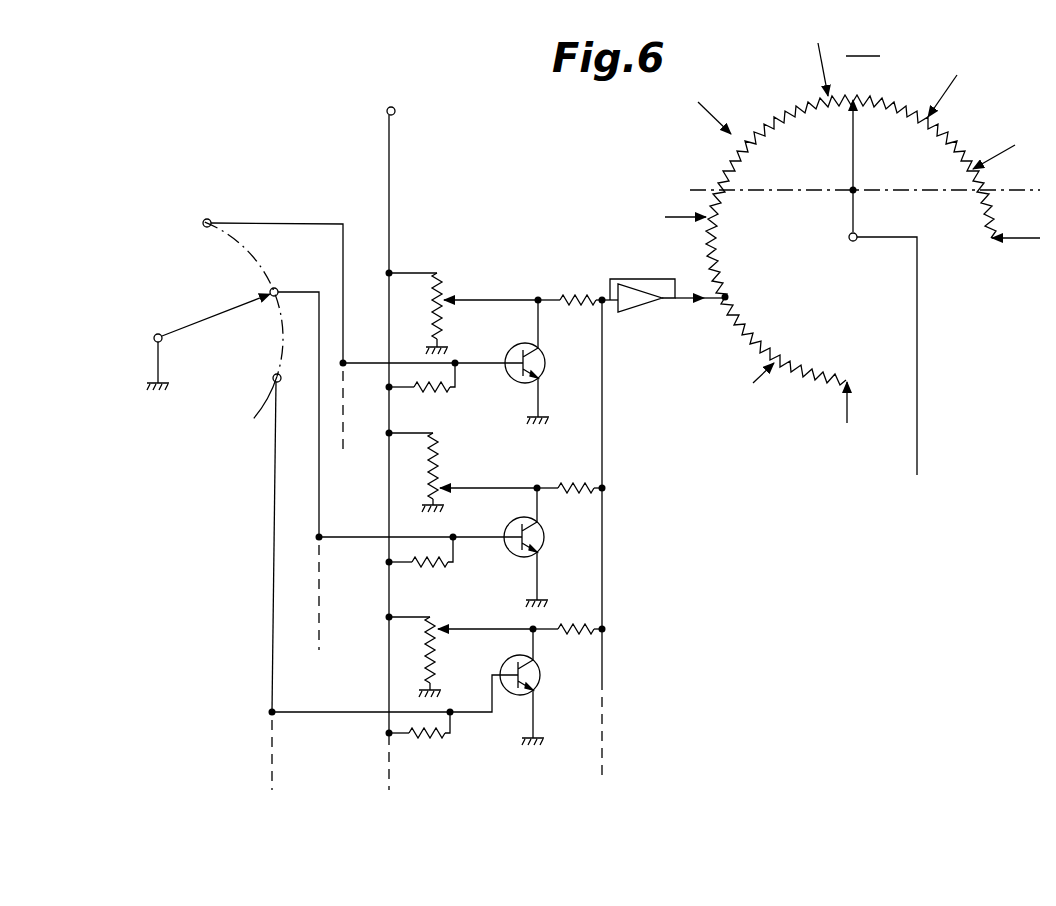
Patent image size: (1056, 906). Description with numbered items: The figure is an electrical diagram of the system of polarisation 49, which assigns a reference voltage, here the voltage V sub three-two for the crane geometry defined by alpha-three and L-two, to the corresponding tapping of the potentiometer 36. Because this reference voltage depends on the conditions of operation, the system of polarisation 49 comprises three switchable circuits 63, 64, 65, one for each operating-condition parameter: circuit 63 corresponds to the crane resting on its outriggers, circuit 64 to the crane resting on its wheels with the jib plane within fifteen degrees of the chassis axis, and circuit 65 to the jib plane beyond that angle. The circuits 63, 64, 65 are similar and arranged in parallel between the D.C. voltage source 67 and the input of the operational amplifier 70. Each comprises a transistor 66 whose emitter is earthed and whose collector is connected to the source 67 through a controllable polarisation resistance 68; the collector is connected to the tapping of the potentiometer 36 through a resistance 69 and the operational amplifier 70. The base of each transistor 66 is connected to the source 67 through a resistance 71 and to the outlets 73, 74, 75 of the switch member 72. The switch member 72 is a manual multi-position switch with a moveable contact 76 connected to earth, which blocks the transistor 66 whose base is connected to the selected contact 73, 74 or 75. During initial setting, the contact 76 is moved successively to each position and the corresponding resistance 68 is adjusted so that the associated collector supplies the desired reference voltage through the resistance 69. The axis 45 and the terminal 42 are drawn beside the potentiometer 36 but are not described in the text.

The potentiometer 36 is at (891, 97).
The terminal connection 42 is at (846, 221).
The axis of ring 45 is at (888, 190).
The system of polarisation 49 is at (543, 292).
The switchable circuit 63 is at (501, 324).
The switchable circuit 64 is at (555, 542).
The switchable circuit 65 is at (554, 682).
The transistor 66 is at (542, 359).
The D.C. voltage source 67 is at (388, 111).
The controllable polarisation resistance 68 is at (442, 288).
The resistance 69 is at (586, 290).
The operational amplifier 70 is at (633, 292).
The resistance 71 is at (440, 392).
The switch member 72 is at (250, 220).
The outlet 73 is at (204, 221).
The outlet 74 is at (277, 289).
The outlet 75 is at (280, 380).
The moveable contact 76 is at (203, 321).